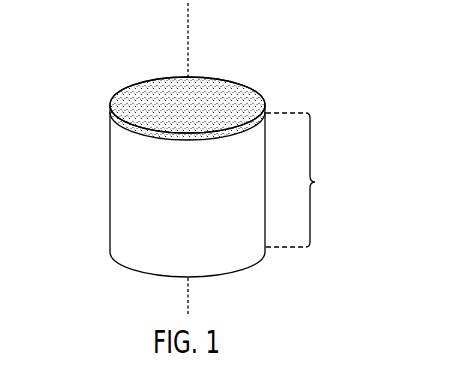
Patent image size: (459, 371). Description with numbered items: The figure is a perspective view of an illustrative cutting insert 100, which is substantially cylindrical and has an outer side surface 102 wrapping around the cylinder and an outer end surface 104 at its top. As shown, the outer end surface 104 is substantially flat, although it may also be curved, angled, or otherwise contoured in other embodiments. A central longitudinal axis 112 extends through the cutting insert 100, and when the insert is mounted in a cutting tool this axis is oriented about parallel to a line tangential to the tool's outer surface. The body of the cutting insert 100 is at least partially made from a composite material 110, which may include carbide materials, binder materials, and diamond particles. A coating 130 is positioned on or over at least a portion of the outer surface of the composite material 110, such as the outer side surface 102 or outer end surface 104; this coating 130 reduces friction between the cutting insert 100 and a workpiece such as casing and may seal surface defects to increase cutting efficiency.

The cutting insert 100 is at (292, 54).
The outer side surface 102 is at (109, 208).
The outer end surface 104 is at (146, 93).
The composite material 110 is at (310, 180).
The central longitudinal axis 112 is at (189, 33).
The coating 130 is at (116, 97).